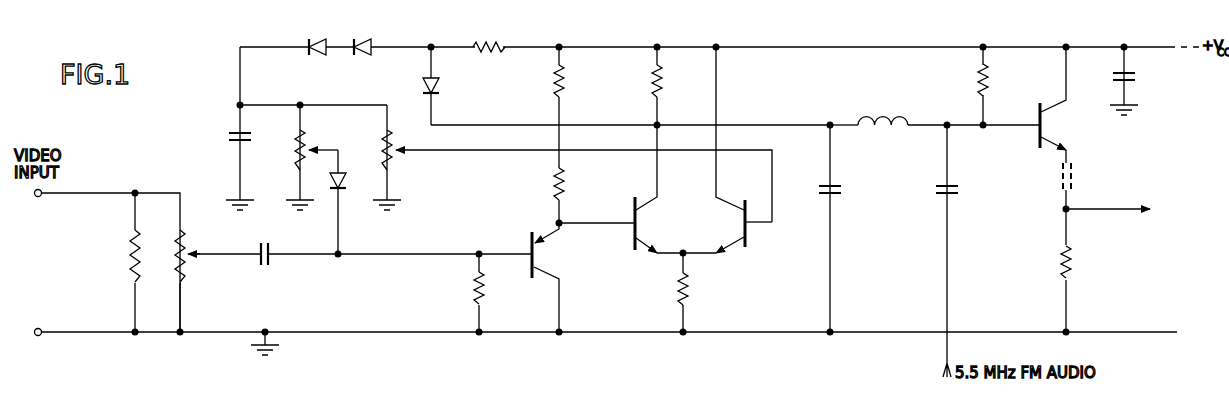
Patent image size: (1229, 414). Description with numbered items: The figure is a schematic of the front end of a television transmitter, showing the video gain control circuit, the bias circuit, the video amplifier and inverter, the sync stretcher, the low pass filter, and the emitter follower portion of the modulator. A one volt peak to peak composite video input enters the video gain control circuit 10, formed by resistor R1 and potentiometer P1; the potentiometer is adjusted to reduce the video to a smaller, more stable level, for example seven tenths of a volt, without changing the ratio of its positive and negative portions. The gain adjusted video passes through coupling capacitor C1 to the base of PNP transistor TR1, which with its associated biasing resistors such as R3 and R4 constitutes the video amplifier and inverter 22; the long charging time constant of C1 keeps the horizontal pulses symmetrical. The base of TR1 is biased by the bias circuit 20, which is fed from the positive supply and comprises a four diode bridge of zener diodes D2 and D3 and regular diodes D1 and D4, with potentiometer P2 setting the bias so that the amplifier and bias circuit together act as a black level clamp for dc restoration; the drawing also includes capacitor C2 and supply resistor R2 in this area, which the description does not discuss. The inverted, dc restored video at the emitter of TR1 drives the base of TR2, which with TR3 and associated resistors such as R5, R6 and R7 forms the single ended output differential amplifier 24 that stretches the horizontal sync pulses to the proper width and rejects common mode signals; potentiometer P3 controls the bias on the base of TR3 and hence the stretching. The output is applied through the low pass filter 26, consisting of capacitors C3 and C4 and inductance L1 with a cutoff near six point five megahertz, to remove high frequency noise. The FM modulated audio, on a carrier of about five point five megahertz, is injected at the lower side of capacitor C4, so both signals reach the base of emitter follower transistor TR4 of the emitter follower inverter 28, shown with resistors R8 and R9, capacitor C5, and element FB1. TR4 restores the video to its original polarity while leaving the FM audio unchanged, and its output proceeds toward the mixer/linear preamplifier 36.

The video gain control circuit 10 is at (85, 256).
The bias circuit 20 is at (393, 41).
The video amplifier and inverter 22 is at (527, 300).
The single ended output differential amplifier 24 is at (739, 262).
The low pass filter 26 is at (898, 258).
The emitter follower inverter 28 is at (1103, 139).
The mixer/linear preamplifier 36 is at (397, 408).
The resistor R1 is at (122, 262).
The potentiometer P1 is at (195, 281).
The coupling capacitor C1 is at (279, 264).
The capacitor C2 is at (229, 128).
The potentiometer P2 is at (312, 157).
The potentiometer P3 is at (572, 163).
The regular diode D1 is at (354, 202).
The zener diode D2 is at (317, 60).
The zener diode D3 is at (361, 60).
The regular diode D4 is at (446, 86).
The resistor R2 is at (489, 35).
The resistor R3 is at (466, 293).
The resistor R4 is at (546, 195).
The resistor R5 is at (573, 107).
The resistor R6 is at (697, 291).
The resistor R7 is at (671, 86).
The resistor R8 is at (996, 86).
The resistor R9 is at (1124, 266).
The PNP transistor TR1 is at (583, 276).
The transistor TR2 is at (675, 189).
The transistor TR3 is at (738, 150).
The emitter follower transistor TR4 is at (1060, 146).
The capacitor C3 is at (846, 228).
The capacitor C4 is at (961, 251).
The capacitor C5 is at (1138, 81).
The inductance L1 is at (869, 111).
The ferrite bead FB1 is at (1087, 176).